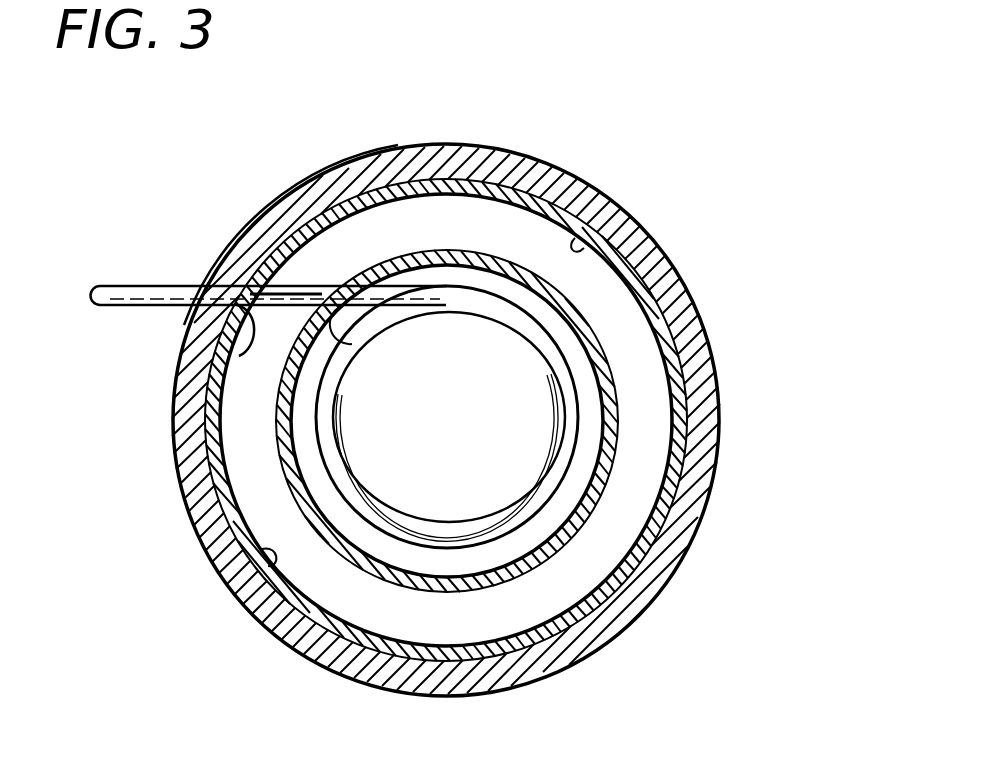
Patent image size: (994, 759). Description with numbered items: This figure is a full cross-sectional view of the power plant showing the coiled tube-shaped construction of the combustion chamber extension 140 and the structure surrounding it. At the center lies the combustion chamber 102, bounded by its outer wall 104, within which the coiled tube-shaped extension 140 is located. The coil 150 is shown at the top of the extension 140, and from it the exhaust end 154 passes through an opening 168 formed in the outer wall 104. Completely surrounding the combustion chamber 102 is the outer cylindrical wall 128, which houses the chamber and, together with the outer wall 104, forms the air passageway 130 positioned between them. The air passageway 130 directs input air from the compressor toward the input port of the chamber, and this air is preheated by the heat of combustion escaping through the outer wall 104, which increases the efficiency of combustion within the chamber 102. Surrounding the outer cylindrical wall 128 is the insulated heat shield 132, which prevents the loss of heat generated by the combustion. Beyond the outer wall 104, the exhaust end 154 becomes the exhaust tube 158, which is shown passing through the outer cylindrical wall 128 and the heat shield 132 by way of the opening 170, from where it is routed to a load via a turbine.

The combustion chamber 102 is at (372, 540).
The outer wall 104 is at (622, 426).
The outer cylindrical wall 128 is at (583, 250).
The air passageway 130 is at (505, 232).
The insulated heat shield 132 is at (267, 218).
The coiled tube-shaped extension 140 is at (568, 356).
The coil 150 is at (510, 538).
The exhaust end 154 is at (378, 266).
The exhaust tube 158 is at (128, 288).
The opening 168 is at (343, 306).
The opening 170 is at (221, 353).